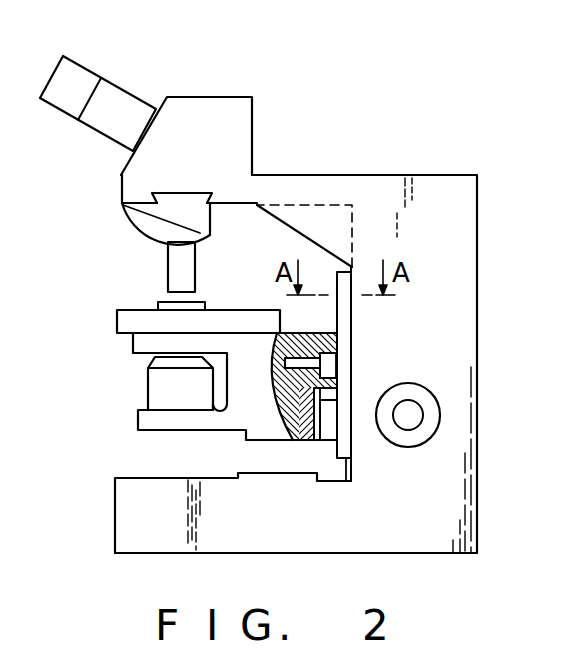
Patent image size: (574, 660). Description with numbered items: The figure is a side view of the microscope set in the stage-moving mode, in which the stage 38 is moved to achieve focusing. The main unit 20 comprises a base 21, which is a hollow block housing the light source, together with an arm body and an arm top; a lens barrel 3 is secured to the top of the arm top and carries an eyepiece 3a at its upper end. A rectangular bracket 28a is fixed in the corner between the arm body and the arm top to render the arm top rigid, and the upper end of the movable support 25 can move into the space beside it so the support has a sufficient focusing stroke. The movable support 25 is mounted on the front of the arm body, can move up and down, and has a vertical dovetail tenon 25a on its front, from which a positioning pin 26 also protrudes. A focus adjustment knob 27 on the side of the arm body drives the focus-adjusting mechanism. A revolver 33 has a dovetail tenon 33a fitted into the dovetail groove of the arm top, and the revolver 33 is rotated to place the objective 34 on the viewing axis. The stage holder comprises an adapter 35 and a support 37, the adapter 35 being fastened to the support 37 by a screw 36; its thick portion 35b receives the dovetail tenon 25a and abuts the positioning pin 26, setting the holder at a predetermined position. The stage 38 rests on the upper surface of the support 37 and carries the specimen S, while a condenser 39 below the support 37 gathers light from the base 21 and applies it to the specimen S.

The lens barrel 3 is at (239, 113).
The eyepiece 3a is at (93, 73).
The main unit 20 is at (433, 177).
The base 21 is at (165, 540).
The movable support 25 is at (350, 332).
The dovetail tenon 25a is at (333, 318).
The positioning pin 26 is at (334, 396).
The focus adjustment knob 27 is at (422, 418).
The rectangular bracket 28a is at (295, 225).
The revolver 33 is at (172, 212).
The dovetail tenon 33a is at (175, 186).
The objective 34 is at (182, 263).
The adapter 35 is at (307, 441).
The thick portion 35b is at (316, 445).
The screw 36 is at (334, 362).
The support 37 is at (258, 428).
The stage 38 is at (118, 323).
The condenser 39 is at (165, 390).
The specimen S is at (162, 303).